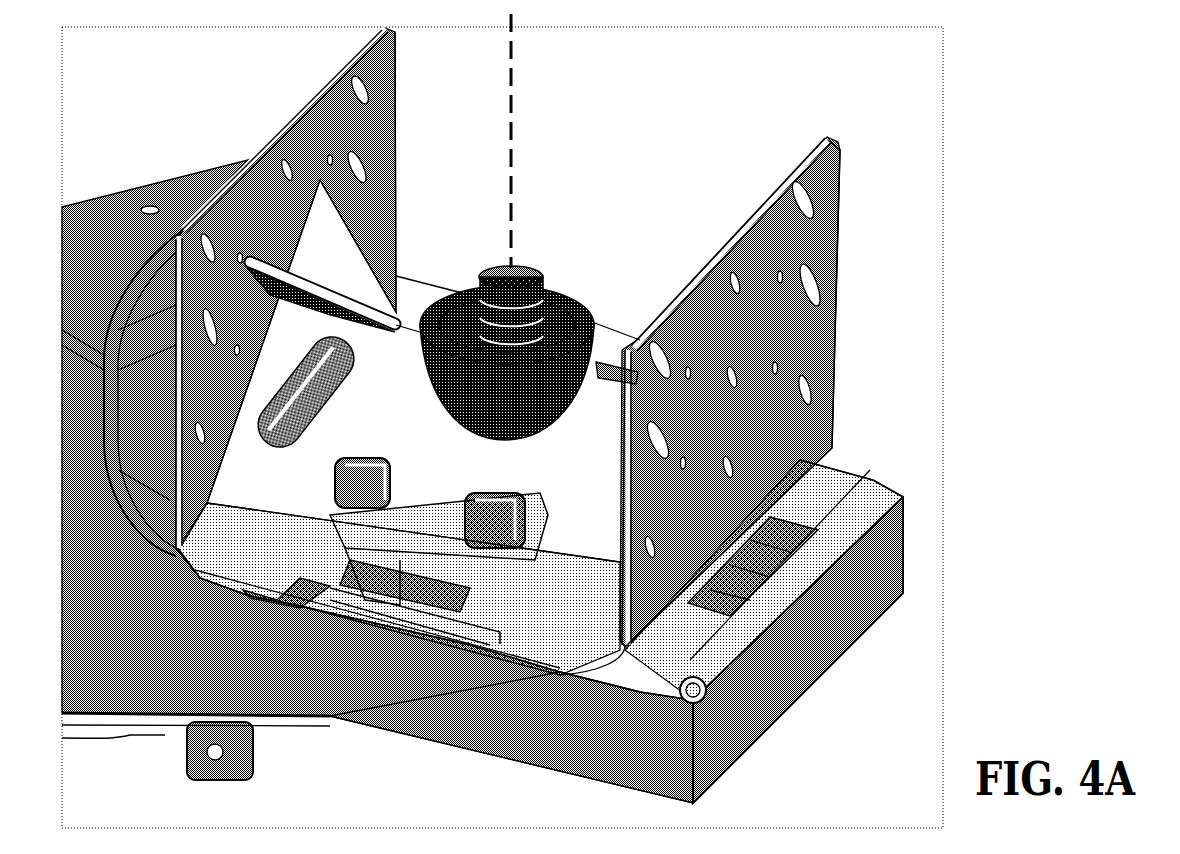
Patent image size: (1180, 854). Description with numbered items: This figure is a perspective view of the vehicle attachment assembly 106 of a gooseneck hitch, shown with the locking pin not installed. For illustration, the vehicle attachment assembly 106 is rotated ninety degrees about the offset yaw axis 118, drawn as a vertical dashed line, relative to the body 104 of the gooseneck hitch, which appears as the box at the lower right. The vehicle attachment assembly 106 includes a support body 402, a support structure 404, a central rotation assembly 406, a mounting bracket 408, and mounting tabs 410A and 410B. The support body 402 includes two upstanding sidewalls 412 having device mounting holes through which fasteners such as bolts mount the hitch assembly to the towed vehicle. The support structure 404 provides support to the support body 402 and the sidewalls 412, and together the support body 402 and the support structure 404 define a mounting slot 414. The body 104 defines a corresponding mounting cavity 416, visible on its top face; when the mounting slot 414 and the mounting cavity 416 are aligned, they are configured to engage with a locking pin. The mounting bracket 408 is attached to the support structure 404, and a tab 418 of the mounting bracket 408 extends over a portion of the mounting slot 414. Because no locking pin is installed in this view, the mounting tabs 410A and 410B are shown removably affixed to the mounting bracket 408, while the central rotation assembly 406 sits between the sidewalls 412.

The body 104 is at (903, 537).
The vehicle attachment assembly 106 is at (290, 123).
The offset yaw axis 118 is at (512, 73).
The support body 402 is at (288, 621).
The support structure 404 is at (197, 577).
The central rotation assembly 406 is at (573, 300).
The mounting bracket 408 is at (453, 480).
The mounting tab 410A is at (333, 478).
The mounting tab 410B is at (518, 545).
The sidewalls 412 is at (392, 110).
The mounting slot 414 is at (415, 641).
The mounting cavity 416 is at (758, 585).
The tab 418 is at (495, 612).